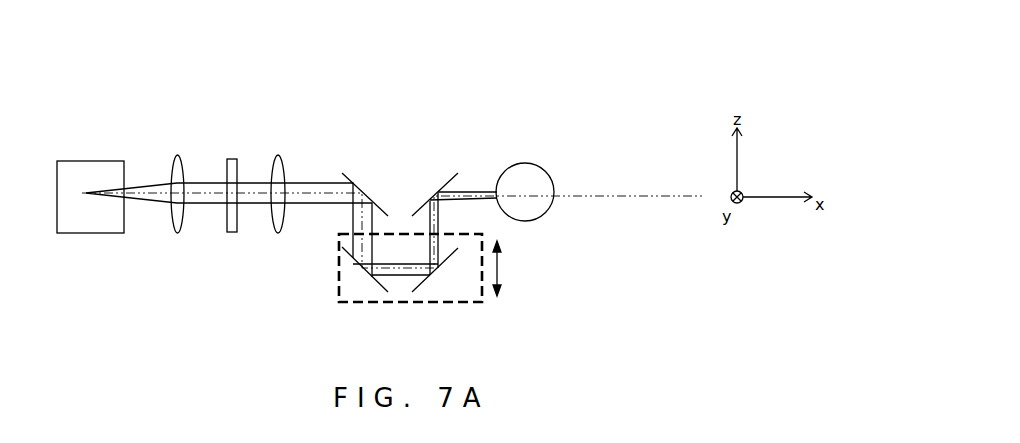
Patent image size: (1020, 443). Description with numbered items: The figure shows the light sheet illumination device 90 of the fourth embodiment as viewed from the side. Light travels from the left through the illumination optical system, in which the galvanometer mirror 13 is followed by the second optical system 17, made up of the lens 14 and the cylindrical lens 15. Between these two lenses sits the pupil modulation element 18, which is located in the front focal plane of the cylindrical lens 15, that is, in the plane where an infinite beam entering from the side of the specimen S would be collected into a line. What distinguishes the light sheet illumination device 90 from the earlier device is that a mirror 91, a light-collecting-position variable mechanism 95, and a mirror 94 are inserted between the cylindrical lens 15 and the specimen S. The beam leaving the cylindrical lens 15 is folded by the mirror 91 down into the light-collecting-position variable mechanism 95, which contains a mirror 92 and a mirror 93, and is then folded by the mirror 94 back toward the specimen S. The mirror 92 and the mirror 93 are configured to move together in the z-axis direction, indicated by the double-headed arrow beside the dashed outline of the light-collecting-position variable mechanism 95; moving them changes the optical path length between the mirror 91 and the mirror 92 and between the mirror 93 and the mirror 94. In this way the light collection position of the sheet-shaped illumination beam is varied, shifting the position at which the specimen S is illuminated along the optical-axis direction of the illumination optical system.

The light sheet illumination device 90 is at (727, 33).
The galvanometer mirror 13 is at (93, 163).
The second optical system 17 is at (307, 94).
The lens 14 is at (177, 154).
The cylindrical lens 15 is at (278, 155).
The pupil modulation element 18 is at (232, 232).
The mirror 91 is at (357, 182).
The mirror 92 is at (377, 283).
The mirror 93 is at (425, 278).
The mirror 94 is at (442, 182).
The light-collecting-position variable mechanism 95 is at (473, 302).
The specimen S is at (545, 165).